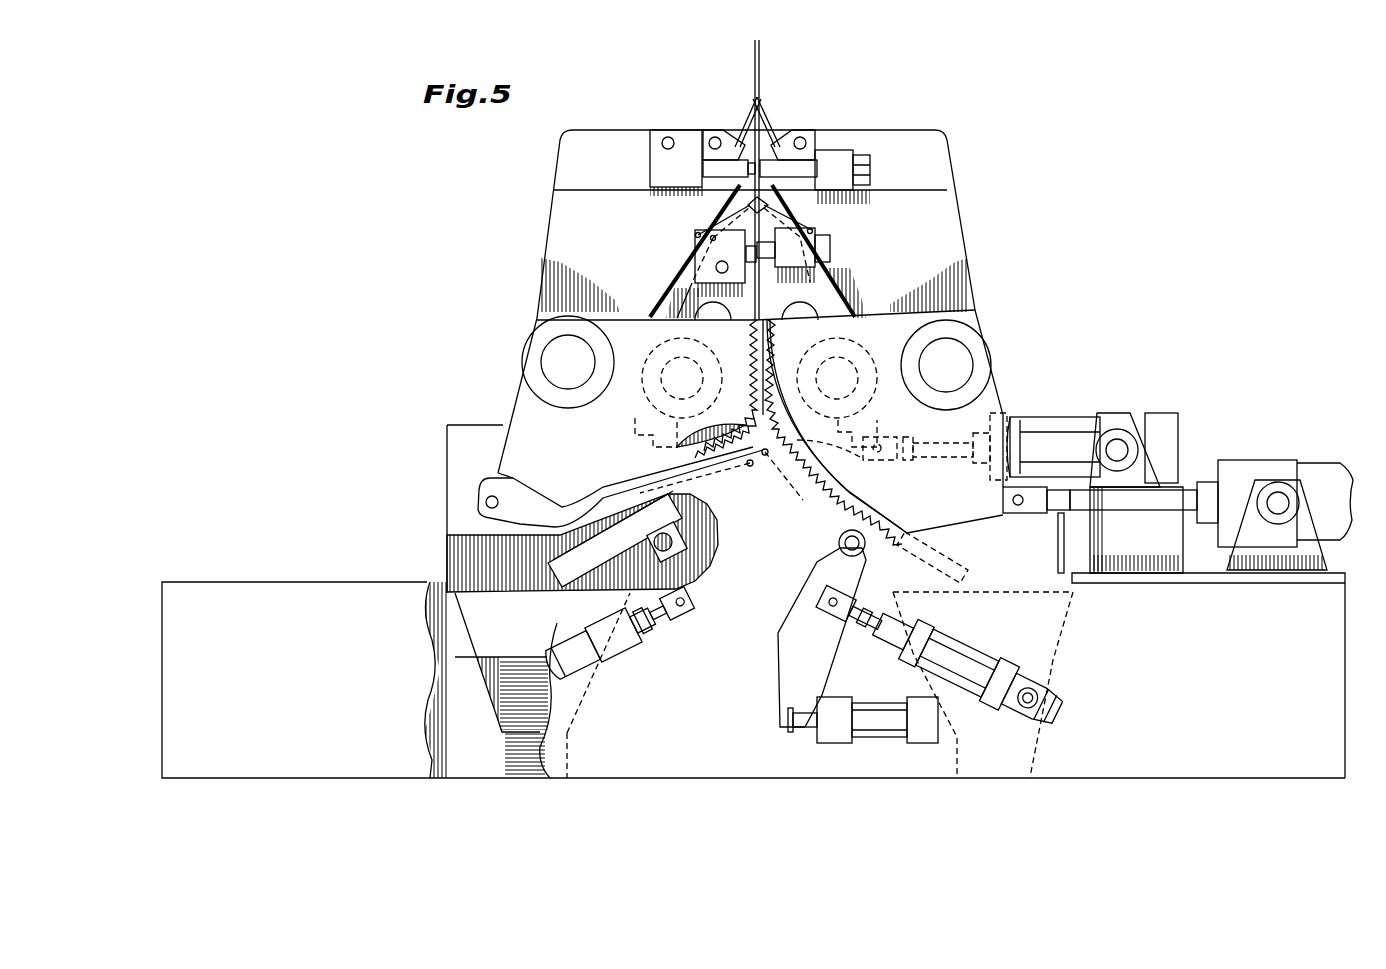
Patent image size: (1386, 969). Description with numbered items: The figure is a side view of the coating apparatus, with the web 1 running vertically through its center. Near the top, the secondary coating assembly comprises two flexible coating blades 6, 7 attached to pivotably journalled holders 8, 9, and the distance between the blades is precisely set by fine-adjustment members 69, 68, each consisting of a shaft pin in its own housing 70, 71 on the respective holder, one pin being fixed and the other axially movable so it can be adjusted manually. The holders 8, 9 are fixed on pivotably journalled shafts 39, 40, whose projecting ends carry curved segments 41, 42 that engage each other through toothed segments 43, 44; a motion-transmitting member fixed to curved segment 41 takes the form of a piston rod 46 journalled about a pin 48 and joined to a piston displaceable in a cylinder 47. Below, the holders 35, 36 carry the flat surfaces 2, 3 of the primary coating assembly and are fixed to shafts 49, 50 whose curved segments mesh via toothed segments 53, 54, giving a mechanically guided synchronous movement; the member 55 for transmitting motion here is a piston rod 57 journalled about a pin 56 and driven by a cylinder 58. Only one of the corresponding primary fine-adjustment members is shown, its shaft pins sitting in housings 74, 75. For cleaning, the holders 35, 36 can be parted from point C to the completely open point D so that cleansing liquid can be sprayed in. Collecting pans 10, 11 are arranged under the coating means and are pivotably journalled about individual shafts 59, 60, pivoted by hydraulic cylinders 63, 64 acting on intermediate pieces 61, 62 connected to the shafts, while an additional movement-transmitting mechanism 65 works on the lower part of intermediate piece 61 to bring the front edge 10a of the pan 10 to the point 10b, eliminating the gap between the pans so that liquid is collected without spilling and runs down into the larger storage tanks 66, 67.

The vertical rod 1 is at (759, 65).
The flat surface 2 is at (790, 193).
The flat surface 3 is at (725, 193).
The coating blade 6 is at (770, 120).
The coating blade 7 is at (746, 120).
The holder 8 is at (925, 128).
The holder 9 is at (578, 128).
The collecting pan 10 is at (940, 562).
The front edge of collecting pan 10a is at (765, 456).
The point 10b is at (750, 467).
The collecting pan 11 is at (616, 535).
The holder 35 is at (860, 300).
The holder 36 is at (668, 297).
The shaft 39 is at (948, 362).
The shaft 40 is at (552, 352).
The curved segment 41 is at (1005, 375).
The curved segment 42 is at (521, 362).
The toothed segment 43 is at (774, 340).
The toothed segment 44 is at (752, 337).
The piston rod 46 is at (1178, 497).
The cylinder 47 is at (1323, 473).
The pin 48 is at (1018, 512).
The shaft 49 is at (837, 378).
The shaft 50 is at (682, 378).
The toothed segment 53 is at (810, 492).
The toothed segment 54 is at (700, 456).
The member for transmitting motion 55 is at (1160, 420).
The pin 56 is at (880, 466).
The piston rod 57 is at (940, 462).
The cylinder 58 is at (1047, 418).
The shaft 59 is at (842, 543).
The shaft 60 is at (682, 540).
The intermediate piece 61 is at (810, 600).
The support block 62 is at (688, 578).
The hydraulic cylinder 63 is at (960, 662).
The hydraulic cylinder 64 is at (615, 656).
The additional movement-transmitting mechanism 65 is at (872, 730).
The storage tank 66 is at (1062, 641).
The storage tank 67 is at (463, 607).
The fine-adjustment member 68 is at (640, 164).
The fine-adjustment member 69 is at (870, 132).
The housing 70 is at (840, 150).
The housing 71 is at (668, 135).
The housing 74 is at (815, 270).
The housing 75 is at (694, 260).
The point C is at (716, 240).
The point D is at (695, 237).